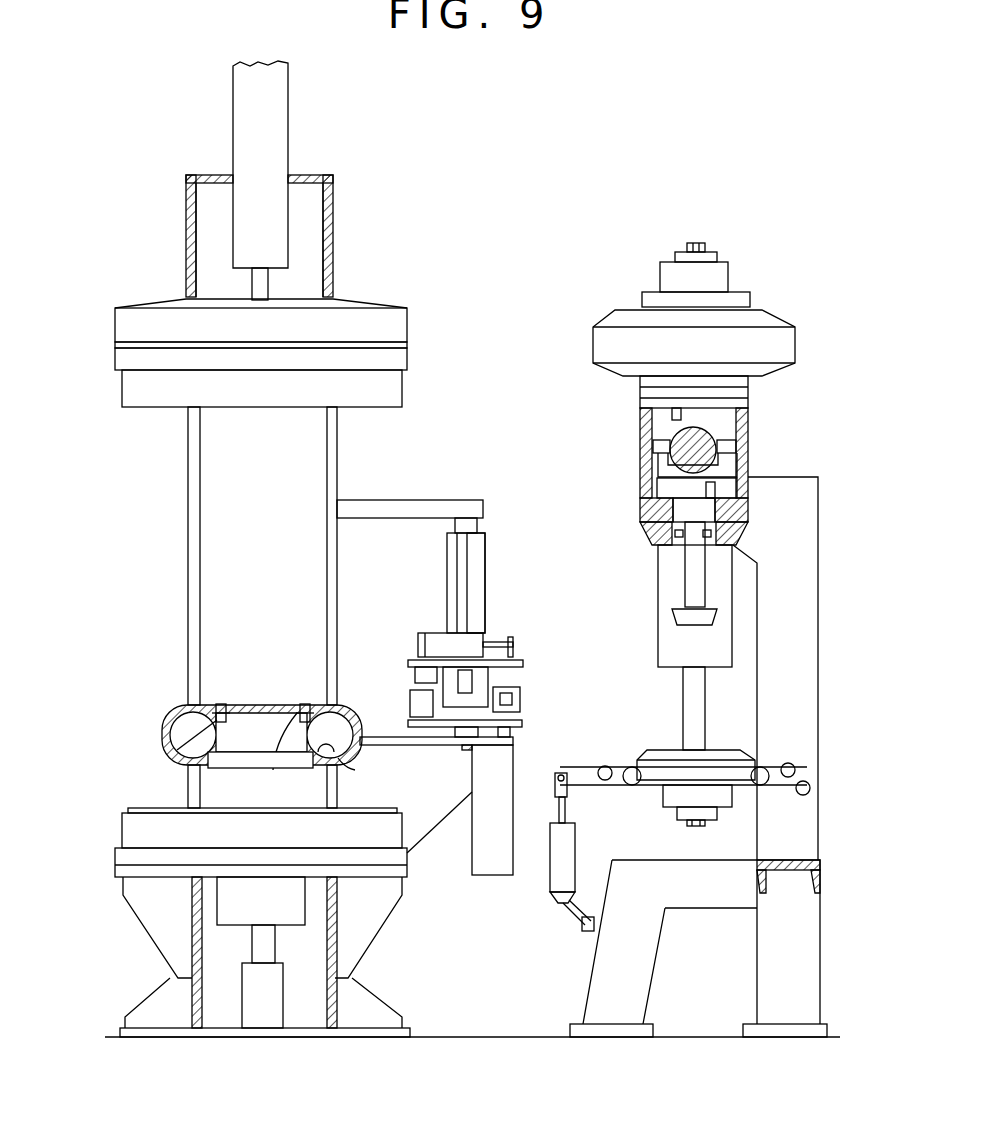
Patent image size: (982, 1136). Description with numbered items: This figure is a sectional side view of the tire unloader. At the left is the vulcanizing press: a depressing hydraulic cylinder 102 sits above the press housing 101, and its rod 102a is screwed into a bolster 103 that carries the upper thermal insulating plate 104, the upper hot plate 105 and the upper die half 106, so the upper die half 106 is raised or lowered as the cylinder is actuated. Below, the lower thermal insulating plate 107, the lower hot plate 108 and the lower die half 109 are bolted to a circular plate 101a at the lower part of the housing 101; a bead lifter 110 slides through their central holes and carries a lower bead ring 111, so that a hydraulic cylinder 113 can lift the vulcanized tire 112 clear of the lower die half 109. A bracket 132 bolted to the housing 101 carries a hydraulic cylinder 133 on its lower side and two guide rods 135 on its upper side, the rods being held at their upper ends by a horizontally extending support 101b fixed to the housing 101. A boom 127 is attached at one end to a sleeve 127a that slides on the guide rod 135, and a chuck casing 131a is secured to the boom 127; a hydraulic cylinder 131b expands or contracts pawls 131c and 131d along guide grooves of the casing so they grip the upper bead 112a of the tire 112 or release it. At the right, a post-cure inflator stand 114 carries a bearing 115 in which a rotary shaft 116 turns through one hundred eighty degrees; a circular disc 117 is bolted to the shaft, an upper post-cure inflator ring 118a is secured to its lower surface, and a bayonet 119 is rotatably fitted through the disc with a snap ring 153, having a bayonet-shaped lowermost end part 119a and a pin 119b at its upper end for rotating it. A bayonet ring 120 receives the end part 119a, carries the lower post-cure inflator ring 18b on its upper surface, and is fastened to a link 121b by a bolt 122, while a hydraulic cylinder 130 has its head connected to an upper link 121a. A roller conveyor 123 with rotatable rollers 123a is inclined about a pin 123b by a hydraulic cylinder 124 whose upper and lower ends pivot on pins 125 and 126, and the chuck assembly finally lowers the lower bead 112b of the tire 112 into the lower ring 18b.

The housing 101 is at (335, 228).
The circular plate 101a is at (249, 957).
The horizontally extending support 101b is at (420, 500).
The depressing hydraulic cylinder 102 is at (290, 160).
The rod 102a is at (270, 290).
The bolster 103 is at (407, 330).
The upper thermal insulating plate 104 is at (407, 345).
The upper hot plate 105 is at (407, 358).
The upper die half 106 is at (402, 388).
The lower thermal insulating plate 107 is at (115, 870).
The lower hot plate 108 is at (122, 838).
The lower die half 109 is at (130, 810).
The bead lifter 110 is at (295, 928).
The lower bead ring 111 is at (313, 765).
The vulcanized tire 112 is at (175, 715).
The upper bead 112a is at (217, 720).
The lower bead 112b is at (373, 770).
The hydraulic cylinder 113 is at (283, 1012).
The post-cure inflator stand 114 is at (590, 985).
The bearing 115 is at (720, 470).
The rotary shaft 116 is at (715, 432).
The circular disc 117 is at (640, 515).
The upper post-cure inflator ring 118a is at (640, 533).
The bayonet 119 is at (685, 585).
The lowermost end part 119a is at (672, 617).
The pin 119b is at (716, 490).
The bayonet ring 120 is at (725, 805).
The upper link 121a is at (717, 256).
The link 121b is at (708, 828).
The bolt 122 is at (690, 826).
The roller conveyor 123 is at (622, 785).
The rollers 123a is at (605, 766).
The pin 123b is at (800, 795).
The hydraulic cylinder 124 is at (548, 878).
The pin 125 is at (555, 770).
The pin 126 is at (563, 903).
The boom 127 is at (485, 580).
The sleeve 127a is at (477, 552).
The hydraulic cylinder 130 is at (658, 657).
The chuck casing 131a is at (523, 662).
The hydraulic cylinder 131b is at (480, 640).
The pawl 131c is at (522, 692).
The pawl 131d is at (413, 665).
The bracket 132 is at (437, 745).
The hydraulic cylinder 133 is at (488, 855).
The guide rods 135 is at (453, 525).
The snap ring 153 is at (676, 548).
The lower post-cure inflator ring 18b is at (725, 750).